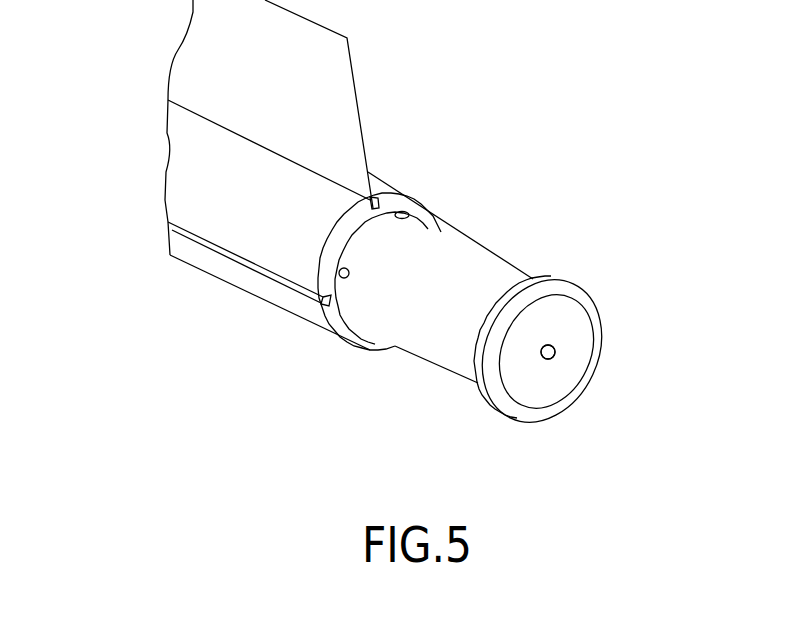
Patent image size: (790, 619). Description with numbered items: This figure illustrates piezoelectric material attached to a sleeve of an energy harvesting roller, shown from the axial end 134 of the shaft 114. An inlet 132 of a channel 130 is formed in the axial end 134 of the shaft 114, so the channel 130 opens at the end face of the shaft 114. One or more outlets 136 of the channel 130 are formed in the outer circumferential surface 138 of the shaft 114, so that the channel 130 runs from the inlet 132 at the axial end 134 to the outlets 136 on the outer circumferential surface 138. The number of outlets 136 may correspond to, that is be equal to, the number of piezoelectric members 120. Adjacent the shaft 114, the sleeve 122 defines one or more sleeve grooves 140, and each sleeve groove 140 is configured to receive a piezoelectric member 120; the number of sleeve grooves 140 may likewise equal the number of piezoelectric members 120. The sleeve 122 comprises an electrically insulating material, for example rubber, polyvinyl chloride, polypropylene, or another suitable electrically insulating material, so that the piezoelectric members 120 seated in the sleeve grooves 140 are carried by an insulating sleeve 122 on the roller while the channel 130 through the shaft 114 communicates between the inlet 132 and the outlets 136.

The piezoelectric member 120 is at (335, 90).
The sleeve 122 is at (213, 182).
The sleeve groove 140 is at (265, 283).
The outer circumferential surface 138 is at (440, 293).
The outlet 136 is at (416, 207).
The shaft 114 is at (452, 340).
The axial end 134 is at (517, 382).
The inlet 132 is at (548, 360).
The channel 130 is at (570, 347).